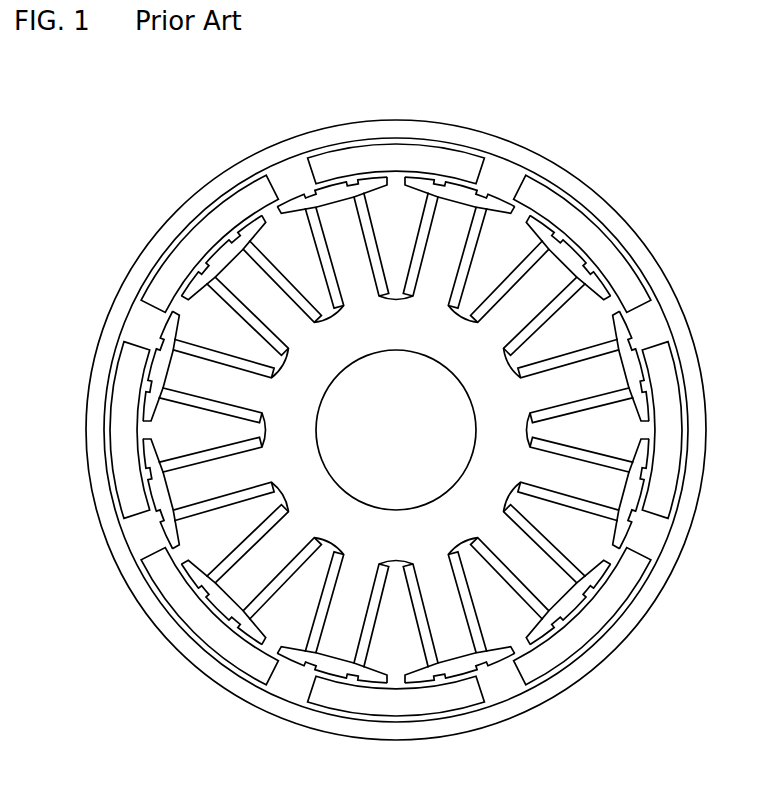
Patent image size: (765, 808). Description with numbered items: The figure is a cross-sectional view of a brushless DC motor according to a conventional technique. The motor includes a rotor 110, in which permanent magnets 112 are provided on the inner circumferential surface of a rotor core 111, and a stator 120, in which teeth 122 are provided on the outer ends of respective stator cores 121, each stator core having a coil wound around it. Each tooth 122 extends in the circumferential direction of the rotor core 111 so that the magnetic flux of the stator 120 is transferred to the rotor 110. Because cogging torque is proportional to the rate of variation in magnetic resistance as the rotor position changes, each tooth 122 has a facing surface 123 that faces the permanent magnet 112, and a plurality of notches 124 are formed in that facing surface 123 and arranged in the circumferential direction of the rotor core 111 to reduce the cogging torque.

The rotor 110 is at (187, 173).
The rotor core 111 is at (278, 174).
The permanent magnet 112 is at (399, 158).
The stator 120 is at (186, 432).
The stator core 121 is at (452, 607).
The tooth 122 is at (458, 663).
The facing surface 123 is at (312, 634).
The notch 124 is at (227, 630).